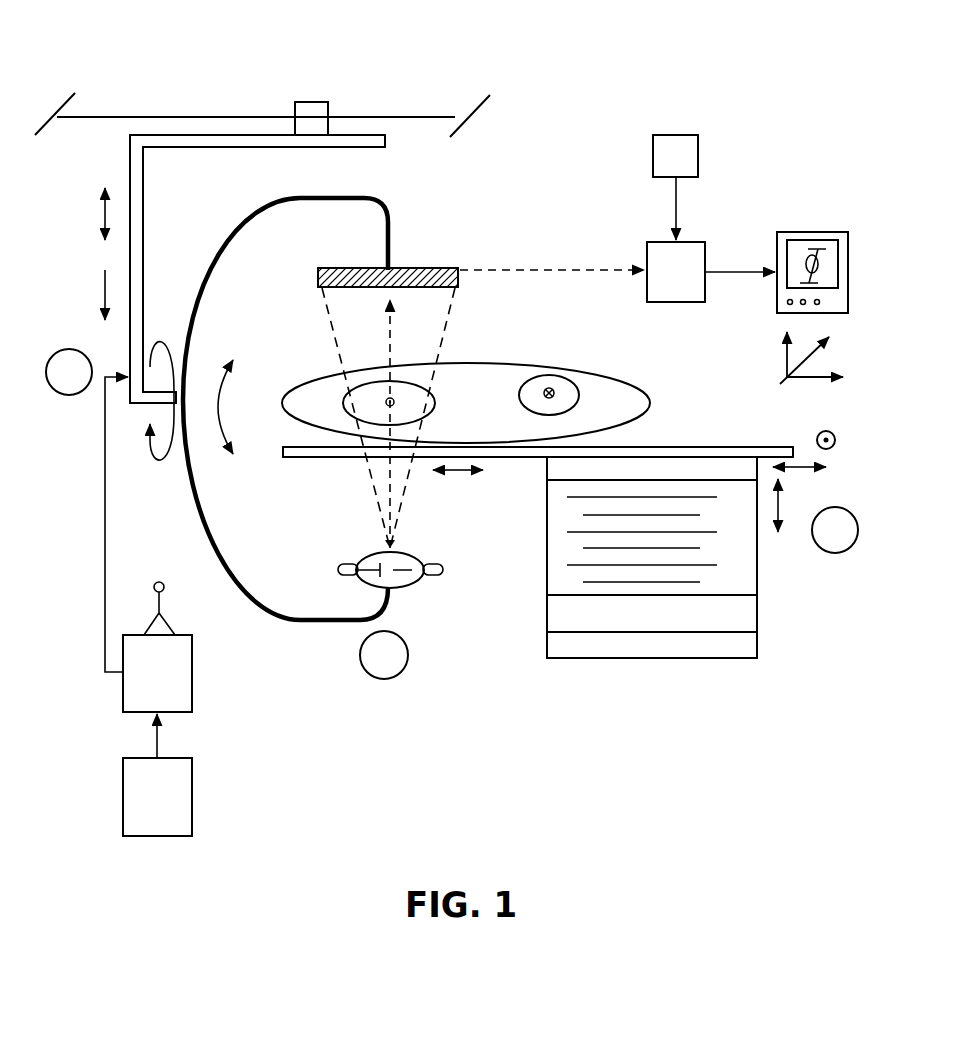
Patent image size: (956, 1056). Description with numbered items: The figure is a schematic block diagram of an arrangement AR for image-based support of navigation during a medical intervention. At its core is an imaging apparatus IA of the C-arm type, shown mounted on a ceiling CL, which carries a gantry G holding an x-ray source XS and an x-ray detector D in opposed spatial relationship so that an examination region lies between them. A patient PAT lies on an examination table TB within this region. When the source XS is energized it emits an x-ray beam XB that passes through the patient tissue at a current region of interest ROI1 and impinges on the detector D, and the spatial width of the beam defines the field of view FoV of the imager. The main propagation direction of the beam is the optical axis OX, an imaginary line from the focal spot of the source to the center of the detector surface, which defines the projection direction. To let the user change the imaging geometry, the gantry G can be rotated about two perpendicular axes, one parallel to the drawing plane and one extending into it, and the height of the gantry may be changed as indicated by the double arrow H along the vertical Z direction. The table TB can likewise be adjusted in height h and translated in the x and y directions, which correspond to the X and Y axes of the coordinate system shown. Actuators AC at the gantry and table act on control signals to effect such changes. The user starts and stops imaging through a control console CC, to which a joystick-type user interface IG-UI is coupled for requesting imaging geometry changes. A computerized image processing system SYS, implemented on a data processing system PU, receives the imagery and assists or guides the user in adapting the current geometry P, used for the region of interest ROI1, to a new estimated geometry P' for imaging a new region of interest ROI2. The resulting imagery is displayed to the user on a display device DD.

The imaging apparatus IA is at (157, 84).
The ceiling CL is at (358, 115).
The gantry G is at (251, 214).
The height H is at (90, 214).
The Z axis Z is at (432, 323).
The actuators AC is at (452, 514).
The control console CC is at (148, 544).
The user interface IG-UI is at (181, 634).
The image processing system SYS is at (176, 792).
The x-ray detector D is at (420, 265).
The x-ray beam XB is at (427, 310).
The field of view FoV is at (397, 460).
The optical axis OX is at (377, 472).
The patient PAT is at (598, 372).
The current imaging geometry P is at (341, 366).
The region of interest ROI1 is at (440, 393).
The new imaging geometry P' is at (561, 349).
The new region of interest ROI2 is at (600, 378).
The examination table TB is at (490, 457).
The x-ray source XS is at (423, 583).
The arrangement AR is at (574, 78).
The data processing system PU is at (683, 142).
The display device DD is at (827, 231).
The X axis X is at (815, 397).
The Y axis Y is at (814, 360).
The y direction y is at (838, 442).
The x direction x is at (809, 469).
The height of the examination table h is at (791, 505).